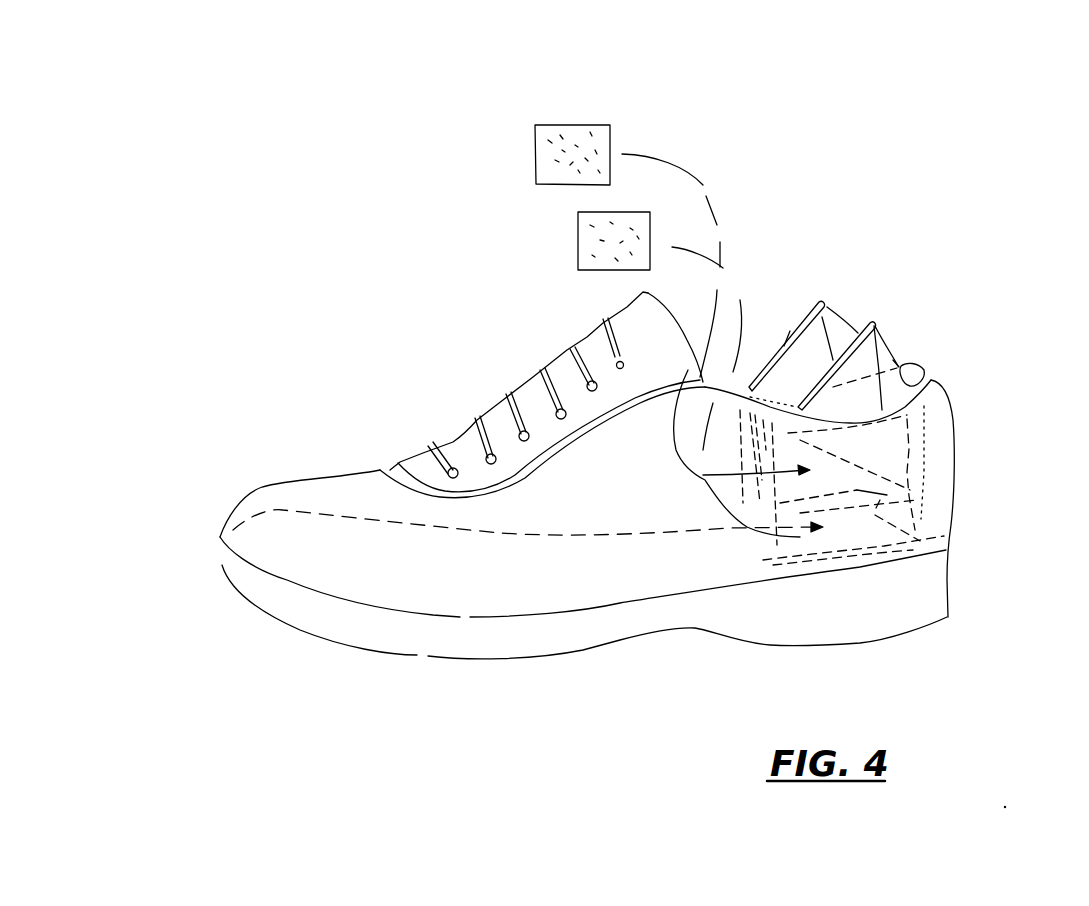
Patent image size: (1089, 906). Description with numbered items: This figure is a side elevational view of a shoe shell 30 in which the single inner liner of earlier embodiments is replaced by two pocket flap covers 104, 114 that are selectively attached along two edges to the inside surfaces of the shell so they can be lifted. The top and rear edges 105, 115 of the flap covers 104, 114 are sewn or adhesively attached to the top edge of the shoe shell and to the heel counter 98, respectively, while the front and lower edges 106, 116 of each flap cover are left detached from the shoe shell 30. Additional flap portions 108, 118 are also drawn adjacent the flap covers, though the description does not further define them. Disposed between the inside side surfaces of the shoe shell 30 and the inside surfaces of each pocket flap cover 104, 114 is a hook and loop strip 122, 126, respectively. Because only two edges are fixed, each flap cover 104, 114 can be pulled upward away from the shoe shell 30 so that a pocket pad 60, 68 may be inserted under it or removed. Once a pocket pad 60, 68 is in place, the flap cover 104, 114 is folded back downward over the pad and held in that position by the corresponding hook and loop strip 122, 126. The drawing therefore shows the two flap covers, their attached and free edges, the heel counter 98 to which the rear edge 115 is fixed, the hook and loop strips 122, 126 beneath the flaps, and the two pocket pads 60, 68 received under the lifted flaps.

The shoe shell 30 is at (489, 374).
The pocket pad 60 is at (535, 152).
The pocket pad 68 is at (577, 247).
The heel counter 98 is at (954, 457).
The pocket flap cover 104 is at (817, 303).
The top edge 105 is at (898, 370).
The front and lower edges 106 is at (790, 331).
The flap 108 is at (828, 308).
The pocket flap cover 114 is at (887, 334).
The rear edge 115 is at (899, 412).
The front and lower edges 116 is at (870, 324).
The flap edge 118 is at (893, 360).
The hook and loop strip 122 is at (748, 450).
The hook and loop strip 126 is at (760, 540).